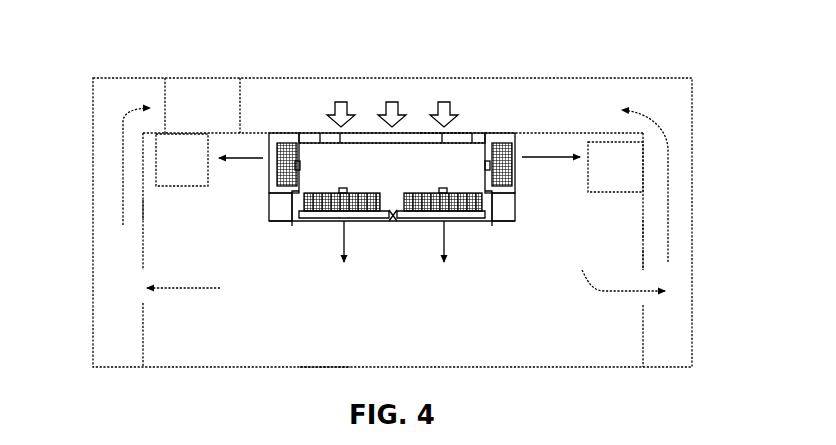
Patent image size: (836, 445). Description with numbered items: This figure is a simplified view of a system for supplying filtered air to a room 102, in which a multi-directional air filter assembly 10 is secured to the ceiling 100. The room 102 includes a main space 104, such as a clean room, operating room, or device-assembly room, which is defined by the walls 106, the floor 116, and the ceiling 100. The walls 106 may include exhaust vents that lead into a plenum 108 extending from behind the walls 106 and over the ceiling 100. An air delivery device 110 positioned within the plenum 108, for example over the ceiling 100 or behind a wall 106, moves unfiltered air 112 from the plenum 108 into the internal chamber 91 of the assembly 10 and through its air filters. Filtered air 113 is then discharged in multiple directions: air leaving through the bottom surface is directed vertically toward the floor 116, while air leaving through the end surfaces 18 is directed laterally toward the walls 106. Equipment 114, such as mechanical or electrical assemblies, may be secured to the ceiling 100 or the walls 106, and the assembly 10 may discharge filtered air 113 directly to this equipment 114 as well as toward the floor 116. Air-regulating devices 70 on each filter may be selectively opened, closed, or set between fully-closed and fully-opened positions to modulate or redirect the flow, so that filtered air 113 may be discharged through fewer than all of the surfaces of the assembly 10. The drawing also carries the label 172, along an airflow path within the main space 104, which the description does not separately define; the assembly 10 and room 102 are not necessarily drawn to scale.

The multi-directional air filter assembly 10 is at (265, 217).
The end surface 18 is at (255, 133).
The air-regulating device 70 is at (298, 162).
The internal chamber 91 is at (474, 173).
The ceiling 100 is at (563, 133).
The room 102 is at (724, 146).
The main space 104 is at (617, 224).
The wall 106 is at (143, 193).
The plenum 108 is at (287, 97).
The air delivery device 110 is at (203, 98).
The unfiltered air 112 is at (455, 117).
The filtered air 113 is at (348, 248).
The equipment 114 is at (167, 172).
The floor 116 is at (303, 367).
The airflow path 172 is at (620, 292).